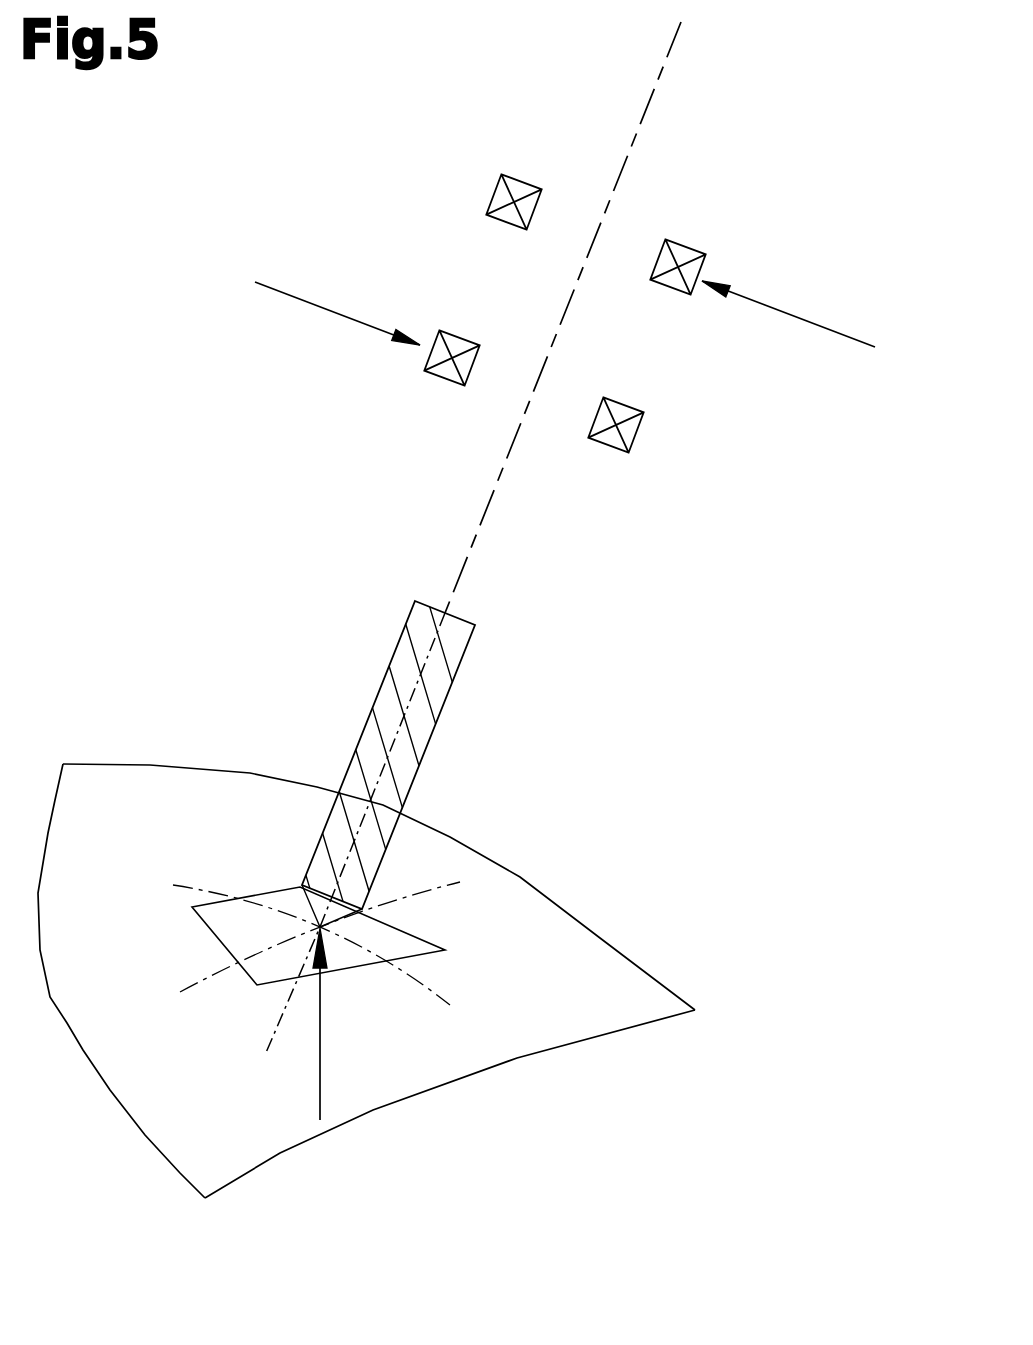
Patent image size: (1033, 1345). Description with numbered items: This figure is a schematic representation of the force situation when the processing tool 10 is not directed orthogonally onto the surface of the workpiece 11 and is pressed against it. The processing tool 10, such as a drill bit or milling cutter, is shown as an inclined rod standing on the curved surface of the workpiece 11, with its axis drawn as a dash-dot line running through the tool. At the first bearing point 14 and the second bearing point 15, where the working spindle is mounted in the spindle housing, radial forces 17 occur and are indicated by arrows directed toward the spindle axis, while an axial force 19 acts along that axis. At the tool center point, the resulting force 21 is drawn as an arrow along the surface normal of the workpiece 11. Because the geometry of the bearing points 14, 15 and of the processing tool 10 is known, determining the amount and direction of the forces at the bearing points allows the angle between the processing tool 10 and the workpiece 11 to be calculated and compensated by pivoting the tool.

The processing tool 10 is at (502, 764).
The workpiece 11 is at (366, 1018).
The first bearing point 14 is at (707, 483).
The second bearing point 15 is at (768, 330).
The radial force 17 is at (338, 295).
The axial force 19 is at (568, 305).
The force acting on the tool center point 21 is at (338, 1042).